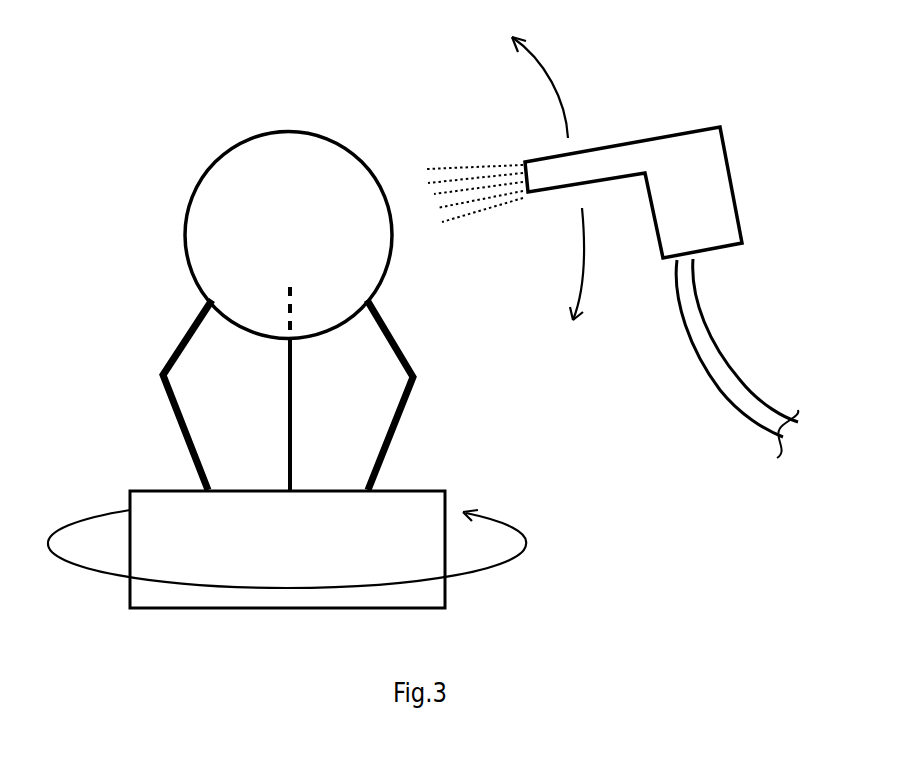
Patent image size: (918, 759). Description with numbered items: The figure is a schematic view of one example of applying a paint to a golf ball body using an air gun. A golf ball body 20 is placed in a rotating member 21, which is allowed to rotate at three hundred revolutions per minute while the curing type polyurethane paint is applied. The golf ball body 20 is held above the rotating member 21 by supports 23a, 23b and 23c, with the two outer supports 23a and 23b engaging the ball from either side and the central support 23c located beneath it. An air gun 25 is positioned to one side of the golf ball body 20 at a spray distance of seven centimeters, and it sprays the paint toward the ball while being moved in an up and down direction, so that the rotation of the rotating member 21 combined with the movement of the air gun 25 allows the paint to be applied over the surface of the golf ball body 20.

The spherical workpiece 20 is at (262, 160).
The rotary table 21 is at (422, 508).
The support arm 23a is at (177, 340).
The support arm 23b is at (407, 356).
The center support rod 23c is at (285, 438).
The spray gun 25 is at (700, 175).